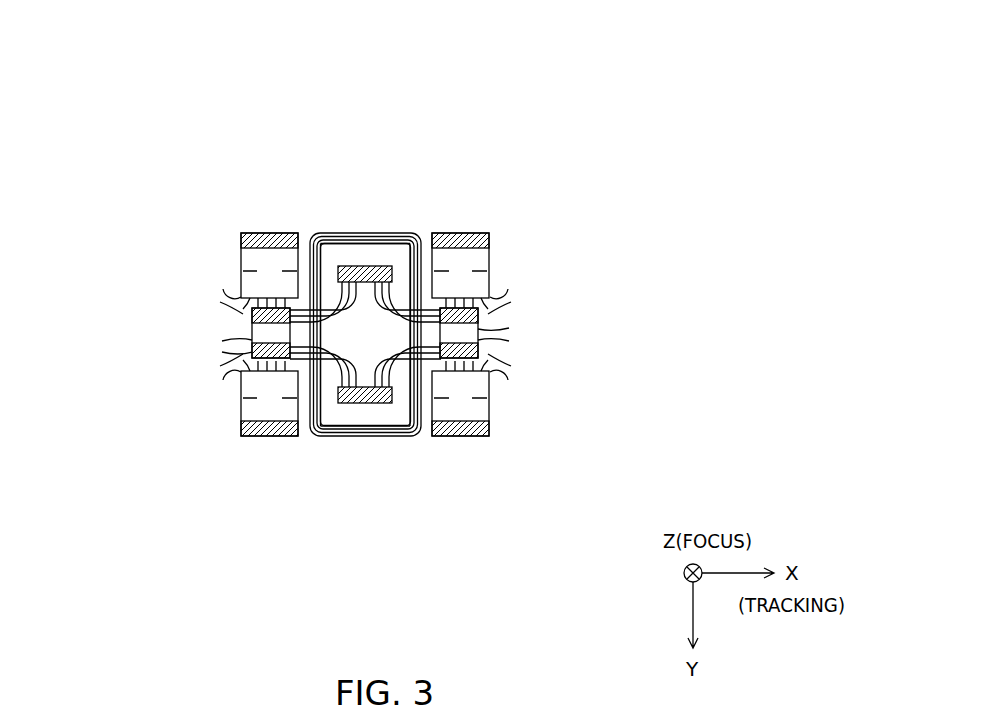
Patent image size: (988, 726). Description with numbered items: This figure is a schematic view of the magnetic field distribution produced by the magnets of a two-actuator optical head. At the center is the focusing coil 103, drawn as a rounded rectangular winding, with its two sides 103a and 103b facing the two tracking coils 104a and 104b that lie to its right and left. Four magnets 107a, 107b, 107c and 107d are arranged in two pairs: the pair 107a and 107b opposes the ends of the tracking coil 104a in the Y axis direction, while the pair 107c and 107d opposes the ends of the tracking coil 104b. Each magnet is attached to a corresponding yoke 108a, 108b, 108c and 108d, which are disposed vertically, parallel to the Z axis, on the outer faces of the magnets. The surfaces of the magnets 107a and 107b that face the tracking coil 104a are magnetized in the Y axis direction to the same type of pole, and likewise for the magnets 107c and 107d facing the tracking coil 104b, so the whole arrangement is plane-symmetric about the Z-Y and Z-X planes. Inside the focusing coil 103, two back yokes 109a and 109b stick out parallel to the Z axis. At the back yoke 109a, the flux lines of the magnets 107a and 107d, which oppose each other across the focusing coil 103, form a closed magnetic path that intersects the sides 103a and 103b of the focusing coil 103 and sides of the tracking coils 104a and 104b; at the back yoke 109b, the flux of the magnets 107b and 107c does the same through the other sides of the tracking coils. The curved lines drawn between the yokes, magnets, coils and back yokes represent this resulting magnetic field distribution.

The focusing coil 103 is at (349, 233).
The side of focusing coil 103a is at (410, 400).
The side of focusing coil 103b is at (324, 262).
The tracking coil 104a is at (467, 333).
The tracking coil 104b is at (265, 335).
The magnet 107a is at (470, 275).
The magnet 107b is at (473, 395).
The magnet 107c is at (268, 398).
The magnet 107d is at (267, 285).
The yoke 108a is at (472, 233).
The yoke 108b is at (457, 436).
The yoke 108c is at (288, 436).
The yoke 108d is at (268, 233).
The back yoke 109a is at (383, 267).
The back yoke 109b is at (372, 403).